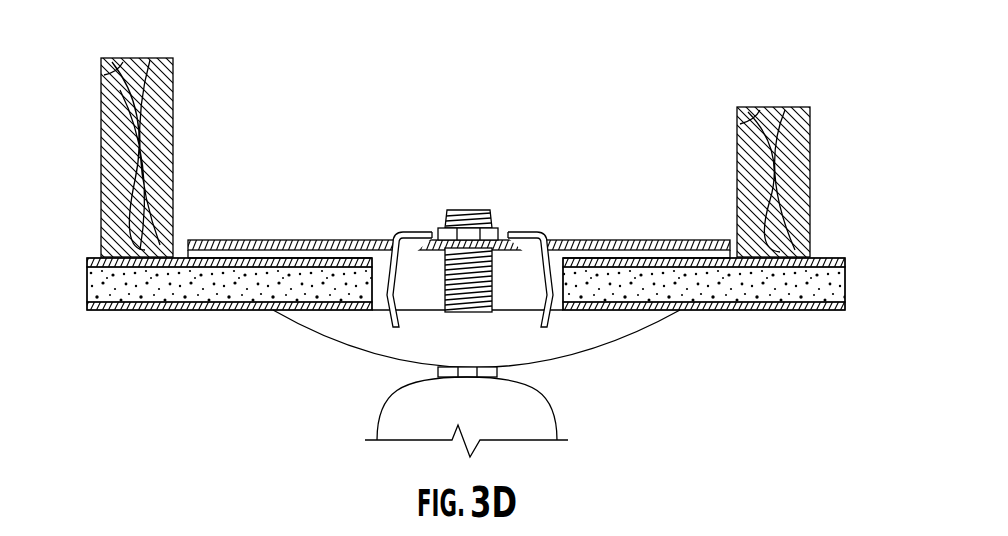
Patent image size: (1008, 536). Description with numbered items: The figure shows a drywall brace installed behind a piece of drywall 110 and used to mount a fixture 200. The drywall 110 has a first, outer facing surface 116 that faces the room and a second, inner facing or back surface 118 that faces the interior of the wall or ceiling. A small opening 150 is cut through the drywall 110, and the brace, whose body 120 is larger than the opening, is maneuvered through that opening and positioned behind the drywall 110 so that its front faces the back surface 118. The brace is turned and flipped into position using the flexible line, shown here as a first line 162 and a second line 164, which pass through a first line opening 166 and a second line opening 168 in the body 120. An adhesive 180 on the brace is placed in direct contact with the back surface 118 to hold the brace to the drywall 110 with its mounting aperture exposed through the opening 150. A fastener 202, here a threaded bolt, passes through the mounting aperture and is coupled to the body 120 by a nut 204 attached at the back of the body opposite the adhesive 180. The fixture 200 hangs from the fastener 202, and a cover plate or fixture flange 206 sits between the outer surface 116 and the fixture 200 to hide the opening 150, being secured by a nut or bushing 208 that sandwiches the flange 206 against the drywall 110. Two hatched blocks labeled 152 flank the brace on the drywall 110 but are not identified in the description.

The drywall 110 is at (466, 325).
The first surface 116 is at (627, 310).
The second surface 118 is at (688, 262).
The body 120 is at (590, 240).
The opening 150 is at (466, 250).
The electronic component 152 is at (160, 73).
The first line 162 is at (395, 272).
The second line 164 is at (548, 272).
The first line opening 166 is at (385, 237).
The second line opening 168 is at (549, 229).
The adhesive 180 is at (632, 253).
The fixture 200 is at (500, 415).
The fastener 202 is at (460, 210).
The nut 204 is at (493, 228).
The fixture flange 206 is at (535, 357).
The nut 208 is at (498, 370).